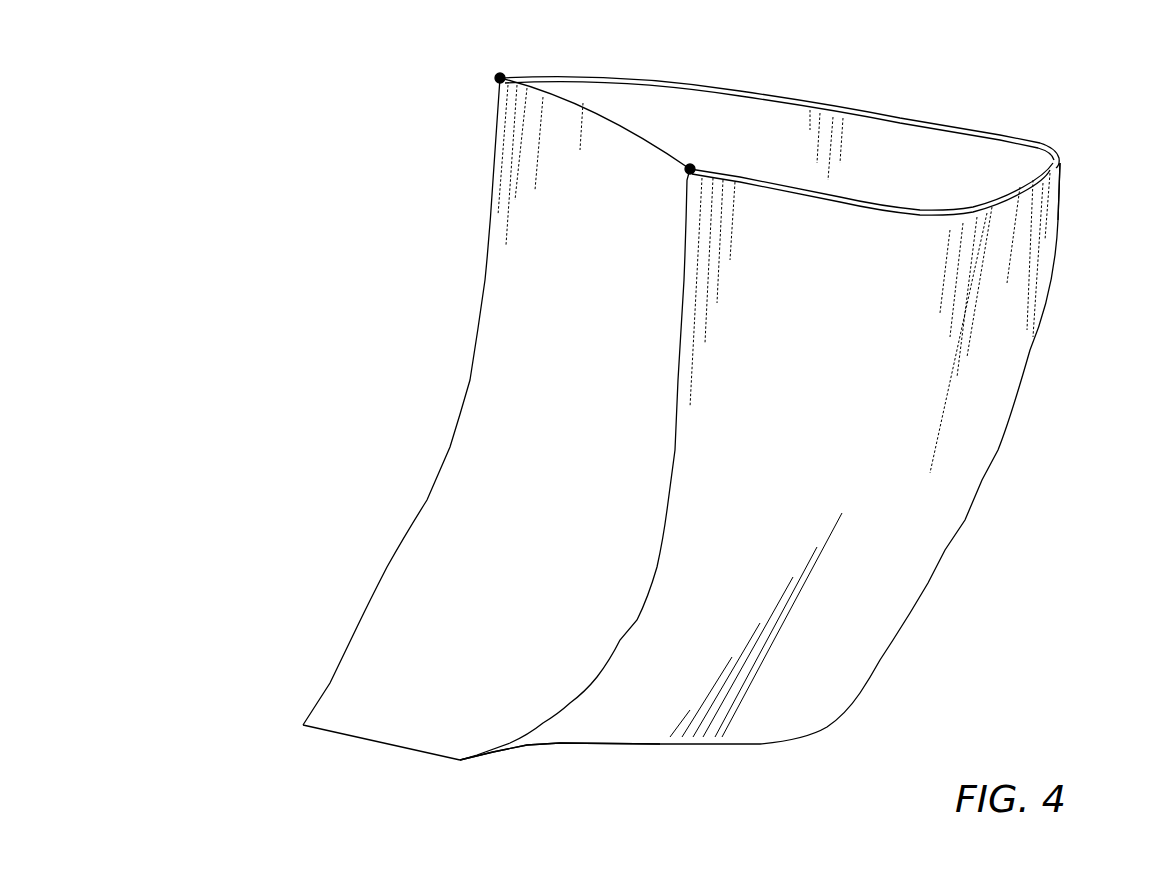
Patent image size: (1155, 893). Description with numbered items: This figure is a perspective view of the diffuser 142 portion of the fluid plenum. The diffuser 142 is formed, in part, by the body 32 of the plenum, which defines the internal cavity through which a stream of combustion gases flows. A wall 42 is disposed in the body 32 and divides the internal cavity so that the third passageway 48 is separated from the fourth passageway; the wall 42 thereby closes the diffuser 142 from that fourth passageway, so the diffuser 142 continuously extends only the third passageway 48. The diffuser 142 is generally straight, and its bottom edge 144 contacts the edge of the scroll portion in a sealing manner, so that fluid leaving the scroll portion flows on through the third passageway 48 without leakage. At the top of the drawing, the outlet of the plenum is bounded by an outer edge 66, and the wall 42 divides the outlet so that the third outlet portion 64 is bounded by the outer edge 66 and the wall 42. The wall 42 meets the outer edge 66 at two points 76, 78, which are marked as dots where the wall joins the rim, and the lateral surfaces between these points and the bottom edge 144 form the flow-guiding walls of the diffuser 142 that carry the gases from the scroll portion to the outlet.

The body 32 is at (1058, 330).
The wall 42 is at (517, 132).
The third passageway 48 is at (1012, 148).
The third outlet portion 64 is at (893, 110).
The outer edge 66 is at (1066, 158).
The point 76 is at (500, 74).
The point 78 is at (692, 165).
The diffuser 142 is at (316, 142).
The bottom edge 144 is at (748, 748).